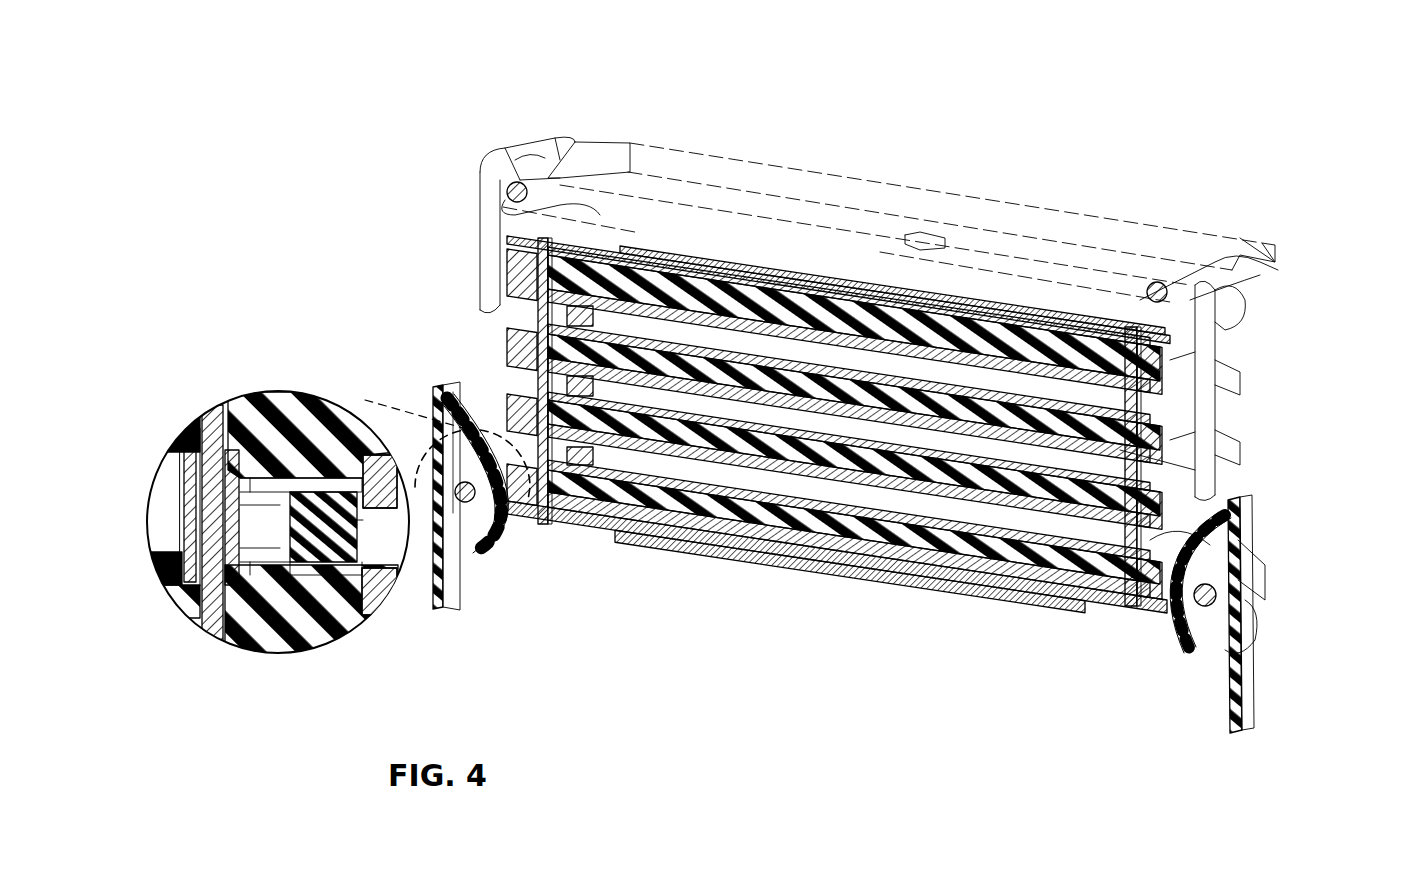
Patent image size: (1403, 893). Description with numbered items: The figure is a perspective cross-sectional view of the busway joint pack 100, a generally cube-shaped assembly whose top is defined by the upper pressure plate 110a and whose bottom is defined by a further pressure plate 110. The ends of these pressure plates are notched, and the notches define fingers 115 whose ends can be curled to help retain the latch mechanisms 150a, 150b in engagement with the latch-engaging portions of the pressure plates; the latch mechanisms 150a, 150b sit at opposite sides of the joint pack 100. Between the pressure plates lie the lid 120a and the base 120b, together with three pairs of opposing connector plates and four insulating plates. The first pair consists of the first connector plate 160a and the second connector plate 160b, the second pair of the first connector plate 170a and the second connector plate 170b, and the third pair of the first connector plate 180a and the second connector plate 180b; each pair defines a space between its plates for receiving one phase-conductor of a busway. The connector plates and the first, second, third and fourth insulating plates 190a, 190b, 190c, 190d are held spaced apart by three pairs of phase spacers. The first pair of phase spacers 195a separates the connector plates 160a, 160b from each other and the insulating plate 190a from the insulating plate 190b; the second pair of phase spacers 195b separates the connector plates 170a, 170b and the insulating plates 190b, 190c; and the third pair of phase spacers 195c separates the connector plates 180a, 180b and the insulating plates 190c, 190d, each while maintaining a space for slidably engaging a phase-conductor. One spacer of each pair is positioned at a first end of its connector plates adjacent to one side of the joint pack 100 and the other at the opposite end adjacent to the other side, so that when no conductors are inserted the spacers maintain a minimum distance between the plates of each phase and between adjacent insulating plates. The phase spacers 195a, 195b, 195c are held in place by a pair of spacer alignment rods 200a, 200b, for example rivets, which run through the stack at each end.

The joint pack 100 is at (1260, 99).
The pressure plate 110 is at (617, 540).
The upper pressure plate 110a is at (830, 255).
The fingers 115 is at (598, 205).
The lid 120a is at (718, 175).
The base 120b is at (1260, 568).
The latch mechanism 150a is at (478, 592).
The latch mechanism 150b is at (1260, 493).
The first connector plate 160a is at (533, 297).
The second connector plate 160b is at (697, 315).
The first connector plate 170a is at (533, 358).
The second connector plate 170b is at (693, 387).
The first connector plate 180a is at (406, 500).
The second connector plate 180b is at (745, 485).
The first insulating plate 190a is at (1238, 312).
The second insulating plate 190b is at (1238, 377).
The third insulating plate 190c is at (247, 400).
The fourth insulating plate 190d is at (172, 595).
The first pair of phase spacers 195a is at (533, 262).
The second pair of phase spacers 195b is at (537, 330).
The third pair of phase spacers 195c is at (678, 533).
The spacer alignment rod 200a is at (538, 520).
The spacer alignment rod 200b is at (1125, 598).